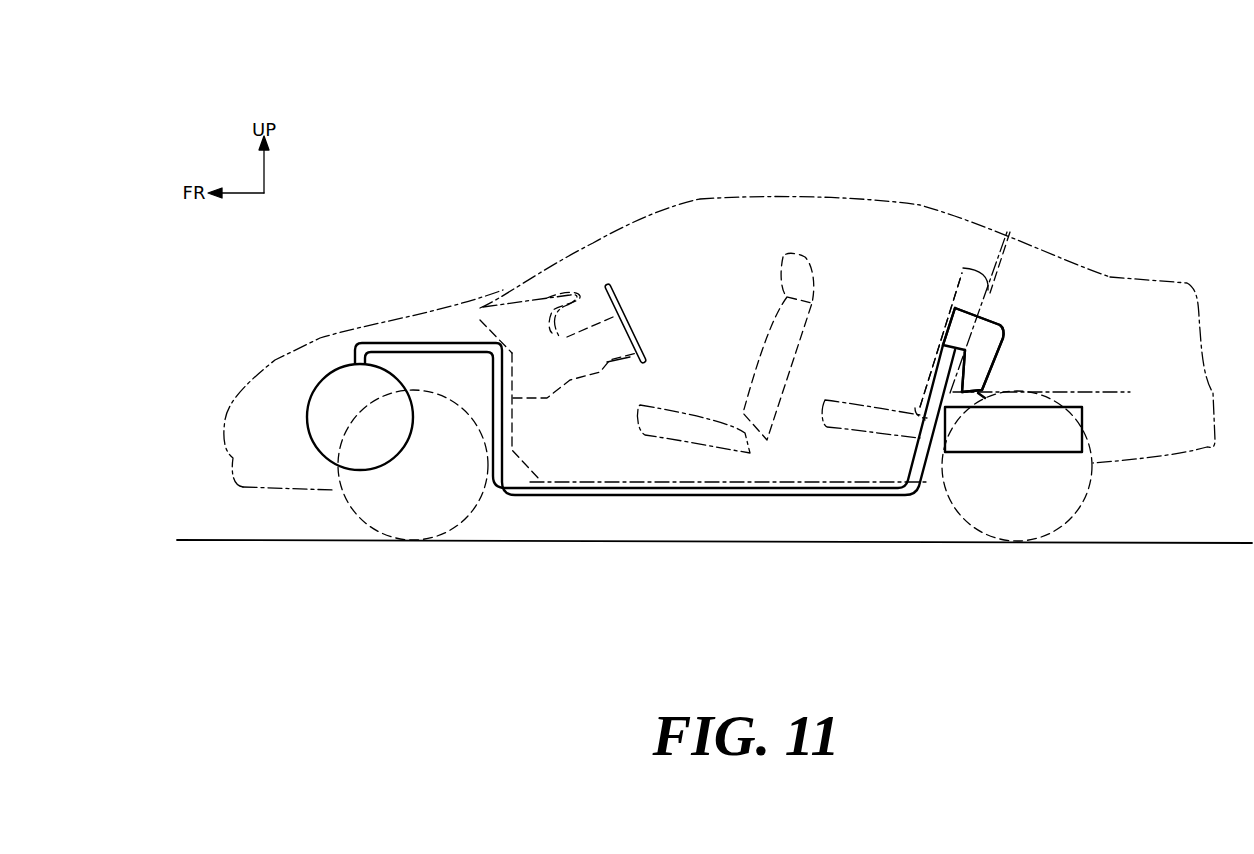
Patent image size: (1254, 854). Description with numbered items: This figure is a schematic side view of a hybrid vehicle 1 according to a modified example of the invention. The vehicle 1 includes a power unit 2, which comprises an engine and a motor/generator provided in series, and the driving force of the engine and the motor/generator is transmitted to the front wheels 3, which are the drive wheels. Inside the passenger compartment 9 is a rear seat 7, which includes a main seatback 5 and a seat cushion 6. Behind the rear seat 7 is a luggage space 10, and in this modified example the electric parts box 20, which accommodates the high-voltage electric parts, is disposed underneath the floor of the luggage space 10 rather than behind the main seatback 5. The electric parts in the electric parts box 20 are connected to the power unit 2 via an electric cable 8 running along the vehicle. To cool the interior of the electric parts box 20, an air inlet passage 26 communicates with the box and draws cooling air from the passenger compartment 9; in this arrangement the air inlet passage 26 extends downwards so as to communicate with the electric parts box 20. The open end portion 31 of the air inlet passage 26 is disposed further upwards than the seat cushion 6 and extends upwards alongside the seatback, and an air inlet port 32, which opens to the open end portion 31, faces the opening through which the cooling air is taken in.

The vehicle 1 is at (966, 116).
The power unit 2 is at (333, 358).
The front wheels 3 is at (360, 520).
The main seatback 5 is at (937, 347).
The seat cushion 6 is at (860, 427).
The rear seat 7 is at (945, 302).
The electric cable 8 is at (598, 490).
The passenger compartment 9 is at (738, 250).
The luggage space 10 is at (1135, 297).
The electric parts box 20 is at (1061, 462).
The air inlet passage 26 is at (983, 343).
The open end portion 31 is at (967, 268).
The air inlet port 32 is at (943, 332).